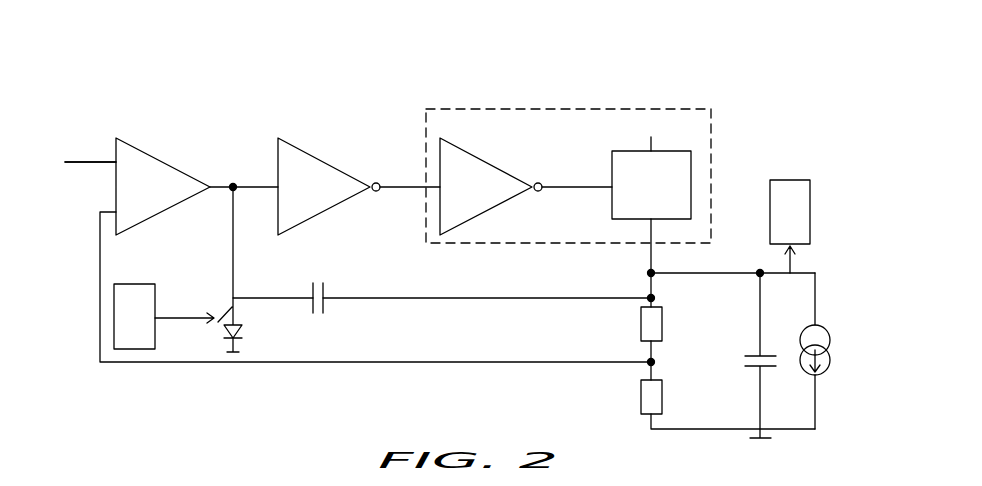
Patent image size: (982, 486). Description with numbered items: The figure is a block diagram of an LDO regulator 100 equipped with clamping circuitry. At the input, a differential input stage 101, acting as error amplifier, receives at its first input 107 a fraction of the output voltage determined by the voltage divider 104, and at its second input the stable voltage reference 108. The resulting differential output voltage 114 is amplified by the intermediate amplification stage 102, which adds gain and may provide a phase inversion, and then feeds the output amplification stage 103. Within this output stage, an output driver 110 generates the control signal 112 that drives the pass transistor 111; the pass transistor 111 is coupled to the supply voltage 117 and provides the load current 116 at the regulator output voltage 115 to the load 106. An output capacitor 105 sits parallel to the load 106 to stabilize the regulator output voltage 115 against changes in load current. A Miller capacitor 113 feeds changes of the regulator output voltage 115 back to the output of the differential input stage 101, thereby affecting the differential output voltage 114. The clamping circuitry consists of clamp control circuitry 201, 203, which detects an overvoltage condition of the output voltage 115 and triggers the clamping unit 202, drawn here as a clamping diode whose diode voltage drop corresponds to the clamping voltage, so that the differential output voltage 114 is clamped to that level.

The LDO regulator 100 is at (153, 78).
The differential input stage 101 is at (173, 160).
The intermediate amplification stage 102 is at (332, 162).
The output amplification stage 103 is at (425, 226).
The voltage divider 104 is at (648, 270).
The output capacitor 105 is at (745, 360).
The load 106 is at (832, 350).
The first input 107 is at (152, 363).
The voltage reference 108 is at (83, 162).
The output driver 110 is at (493, 162).
The pass transistor 111 is at (691, 172).
The control signal 112 is at (566, 188).
The Miller capacitor 113 is at (318, 315).
The differential output voltage 114 is at (248, 185).
The regulator output voltage 115 is at (690, 278).
The load current 116 is at (815, 285).
The supply voltage 117 is at (652, 146).
The clamp control circuitry 201 is at (114, 312).
The clamping unit 202 is at (250, 338).
The clamp control circuitry 203 is at (810, 205).